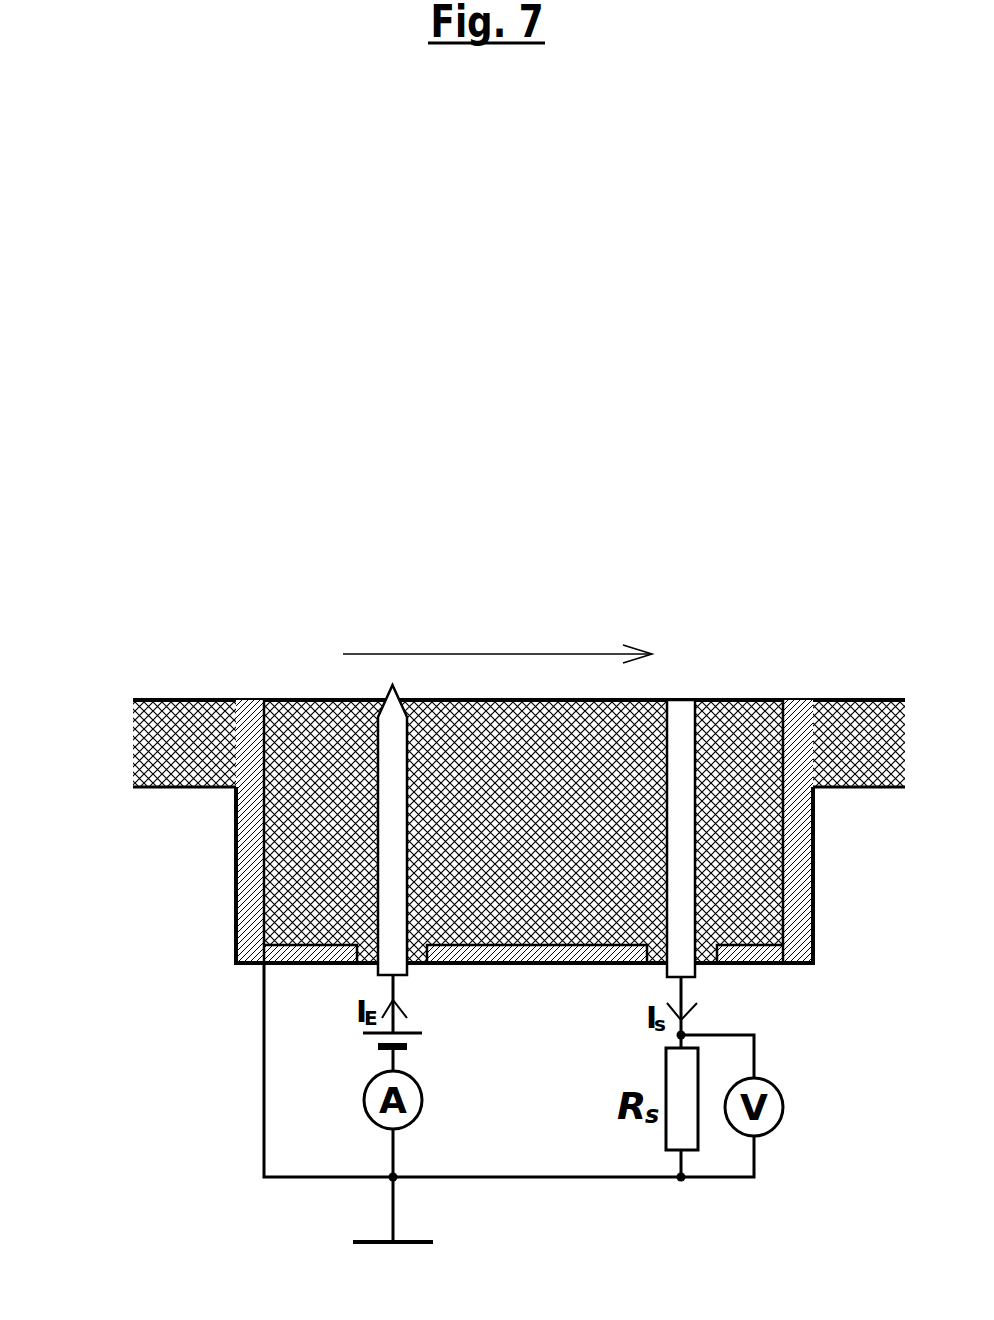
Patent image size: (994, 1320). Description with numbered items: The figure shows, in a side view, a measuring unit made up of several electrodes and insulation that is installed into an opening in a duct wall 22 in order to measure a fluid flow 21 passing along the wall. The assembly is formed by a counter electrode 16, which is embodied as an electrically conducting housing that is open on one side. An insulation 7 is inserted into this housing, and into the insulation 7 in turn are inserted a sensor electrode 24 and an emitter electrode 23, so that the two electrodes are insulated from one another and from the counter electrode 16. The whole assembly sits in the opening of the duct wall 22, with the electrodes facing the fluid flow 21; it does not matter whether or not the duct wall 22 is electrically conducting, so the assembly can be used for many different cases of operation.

The insulation 7 is at (483, 700).
The counter electrode 16 is at (235, 885).
The fluid flow 21 is at (607, 640).
The duct wall 22 is at (183, 730).
The emitter electrode 23 is at (393, 702).
The sensor electrode 24 is at (682, 737).